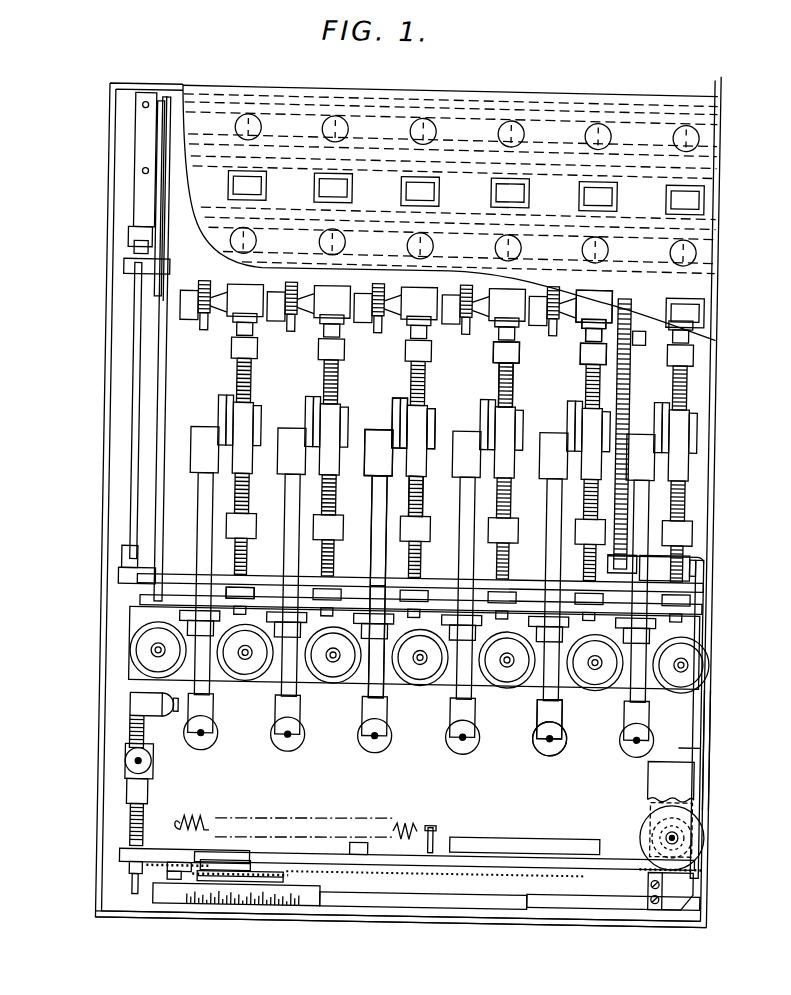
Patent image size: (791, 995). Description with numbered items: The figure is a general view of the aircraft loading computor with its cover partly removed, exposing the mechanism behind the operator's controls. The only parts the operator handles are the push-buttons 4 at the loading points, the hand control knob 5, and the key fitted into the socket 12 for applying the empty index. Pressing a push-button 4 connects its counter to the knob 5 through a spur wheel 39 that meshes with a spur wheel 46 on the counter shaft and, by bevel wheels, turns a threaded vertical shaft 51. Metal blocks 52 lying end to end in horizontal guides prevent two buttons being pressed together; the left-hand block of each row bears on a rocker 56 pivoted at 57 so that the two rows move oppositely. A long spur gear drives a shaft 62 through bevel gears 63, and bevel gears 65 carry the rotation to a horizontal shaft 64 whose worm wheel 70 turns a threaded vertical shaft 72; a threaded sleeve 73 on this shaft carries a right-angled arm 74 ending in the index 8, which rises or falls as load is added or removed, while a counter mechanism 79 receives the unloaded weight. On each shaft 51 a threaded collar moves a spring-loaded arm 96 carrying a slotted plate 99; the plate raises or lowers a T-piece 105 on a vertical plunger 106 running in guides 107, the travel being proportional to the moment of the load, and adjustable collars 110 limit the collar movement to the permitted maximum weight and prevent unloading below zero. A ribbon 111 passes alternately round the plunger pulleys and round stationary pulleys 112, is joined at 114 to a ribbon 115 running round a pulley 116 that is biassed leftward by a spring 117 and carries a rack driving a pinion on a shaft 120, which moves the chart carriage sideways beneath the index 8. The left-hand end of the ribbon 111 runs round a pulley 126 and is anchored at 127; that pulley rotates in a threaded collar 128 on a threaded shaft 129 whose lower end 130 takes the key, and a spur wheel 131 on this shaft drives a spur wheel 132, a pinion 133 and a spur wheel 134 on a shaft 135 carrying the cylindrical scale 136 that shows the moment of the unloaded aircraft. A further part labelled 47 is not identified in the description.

The push-button 4 is at (413, 118).
The hand control knob 5 is at (573, 110).
The index 8 is at (705, 747).
The socket 12 is at (156, 917).
The spur wheel 39 is at (589, 314).
The spur wheel 46 is at (551, 320).
The spindle head housing 47 is at (596, 305).
The vertical shaft 51 is at (497, 343).
The metal blocks 52 is at (168, 114).
The rocker 56 is at (153, 147).
The pivot 57 is at (147, 171).
The shaft 62 is at (136, 378).
The bevel gears 63 is at (136, 243).
The horizontal shaft 64 is at (267, 572).
The bevel gears 65 is at (139, 578).
The worm wheel 70 is at (609, 573).
The vertical shaft 72 is at (635, 372).
The threaded sleeve 73 is at (618, 541).
The arm 74 is at (615, 559).
The counter mechanism 79 is at (667, 568).
The arm 96 is at (439, 414).
The plate 99 is at (408, 400).
The T-piece 105 is at (393, 405).
The vertical plunger 106 is at (387, 493).
The guides 107 is at (381, 533).
The adjustable collars 110 is at (497, 354).
The ribbon 111 is at (557, 730).
The stationary pulleys 112 is at (556, 692).
The connection 114 is at (689, 898).
The ribbon 115 is at (572, 900).
The pulley 116 is at (454, 902).
The spring 117 is at (413, 817).
The shaft 120 is at (681, 828).
The pulley 126 is at (137, 760).
The anchorage 127 is at (168, 703).
The threaded collar 128 is at (142, 790).
The threaded shaft 129 is at (148, 830).
The lower end 130 is at (147, 890).
The spur wheel 131 is at (147, 860).
The spur wheel 132 is at (242, 868).
The pinion 133 is at (190, 878).
The spur wheel 134 is at (304, 867).
The shaft 135 is at (260, 858).
The cylindrical scale 136 is at (329, 895).